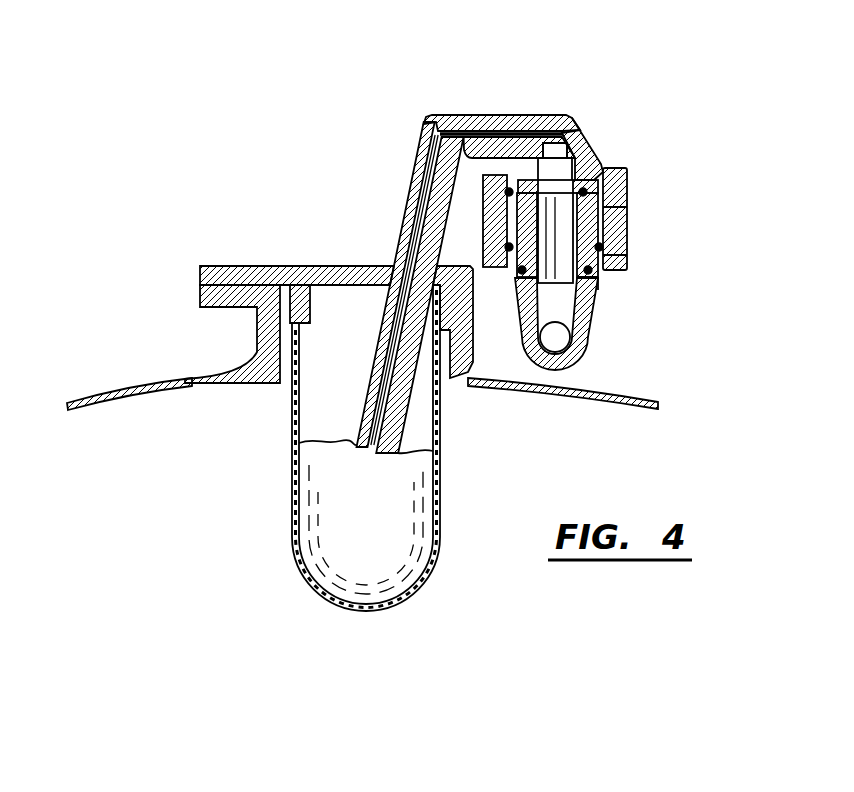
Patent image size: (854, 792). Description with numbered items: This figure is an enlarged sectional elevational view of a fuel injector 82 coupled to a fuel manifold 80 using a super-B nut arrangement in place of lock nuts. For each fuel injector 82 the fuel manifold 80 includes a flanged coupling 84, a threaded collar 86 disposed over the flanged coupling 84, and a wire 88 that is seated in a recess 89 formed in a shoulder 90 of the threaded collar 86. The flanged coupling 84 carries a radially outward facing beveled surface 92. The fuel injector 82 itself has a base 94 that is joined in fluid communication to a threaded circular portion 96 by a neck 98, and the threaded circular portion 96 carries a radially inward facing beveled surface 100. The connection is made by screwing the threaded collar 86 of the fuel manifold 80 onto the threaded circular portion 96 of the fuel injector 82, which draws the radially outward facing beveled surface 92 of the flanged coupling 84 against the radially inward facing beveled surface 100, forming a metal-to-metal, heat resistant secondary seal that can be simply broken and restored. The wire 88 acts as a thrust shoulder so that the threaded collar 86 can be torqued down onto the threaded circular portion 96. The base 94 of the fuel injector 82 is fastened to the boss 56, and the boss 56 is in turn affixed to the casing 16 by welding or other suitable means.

The casing 16 is at (121, 400).
The boss 56 is at (257, 333).
The fuel manifold 80 is at (656, 236).
The fuel injector 82 is at (344, 225).
The flanged coupling 84 is at (592, 322).
The threaded collar 86 is at (620, 187).
The wire 88 is at (503, 268).
The recess 89 is at (624, 256).
The shoulder 90 is at (605, 272).
The radially outward facing beveled surface 92 is at (600, 283).
The base 94 is at (290, 266).
The threaded circular portion 96 is at (588, 150).
The neck 98 is at (500, 114).
The radially inward facing beveled surface 100 is at (607, 240).